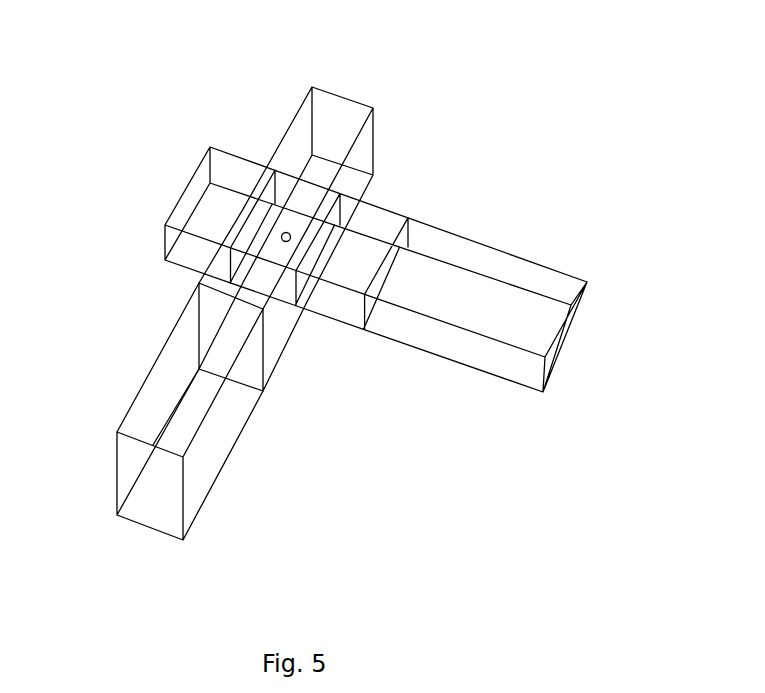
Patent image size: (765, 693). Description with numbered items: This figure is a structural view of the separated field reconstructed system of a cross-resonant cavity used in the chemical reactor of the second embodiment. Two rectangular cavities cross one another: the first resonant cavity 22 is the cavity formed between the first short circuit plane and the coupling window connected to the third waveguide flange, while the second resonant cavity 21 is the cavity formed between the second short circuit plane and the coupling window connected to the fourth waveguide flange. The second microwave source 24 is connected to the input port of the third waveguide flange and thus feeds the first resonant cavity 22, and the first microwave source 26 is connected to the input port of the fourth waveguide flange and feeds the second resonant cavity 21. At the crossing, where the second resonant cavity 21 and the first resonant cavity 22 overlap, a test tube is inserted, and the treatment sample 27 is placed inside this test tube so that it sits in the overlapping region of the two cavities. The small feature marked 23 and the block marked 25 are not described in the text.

The second resonant cavity 21 is at (343, 108).
The first resonant cavity 22 is at (203, 190).
The limiting collar 23 is at (412, 250).
The second microwave source 24 is at (518, 282).
The limiting block 25 is at (215, 317).
The first microwave source 26 is at (150, 495).
The treatment sample 27 is at (280, 241).